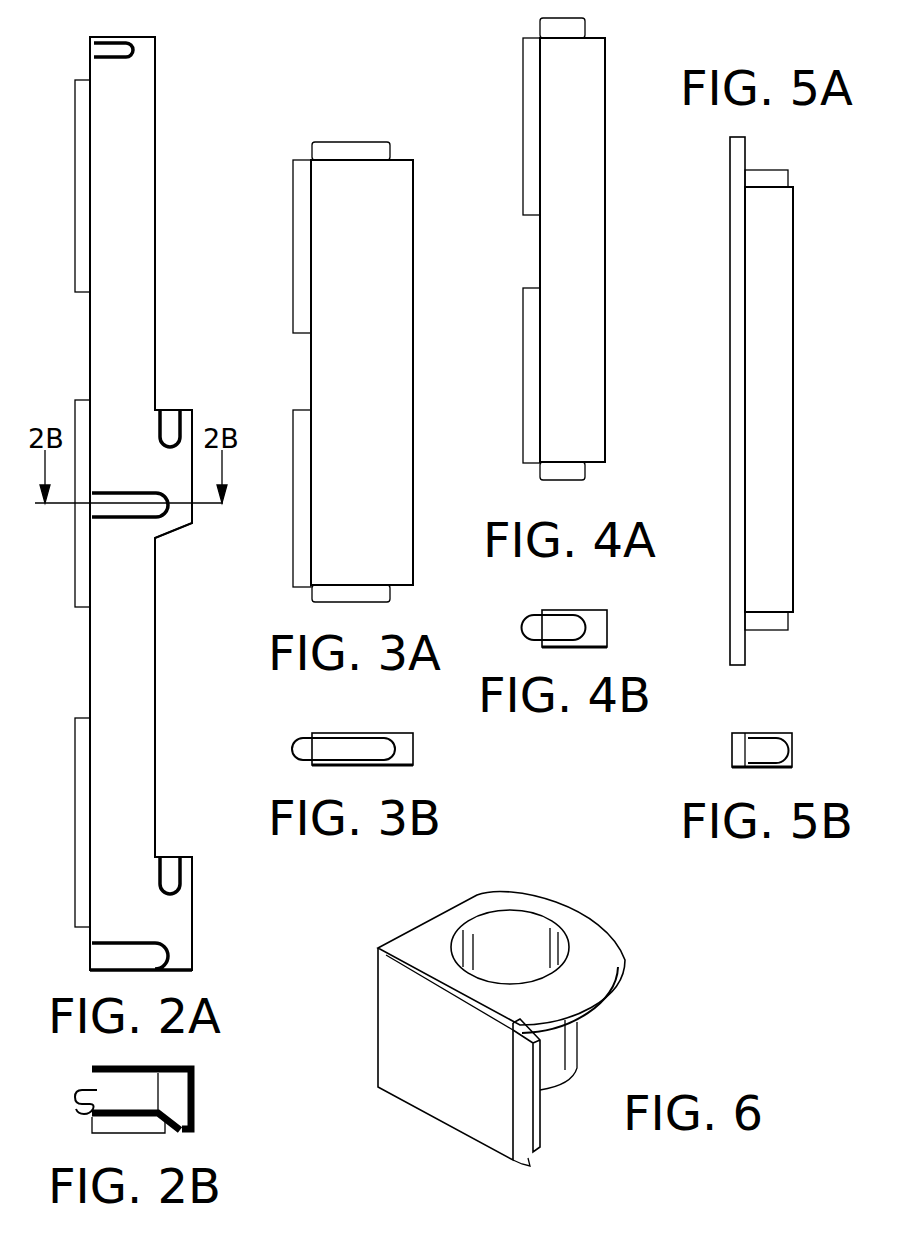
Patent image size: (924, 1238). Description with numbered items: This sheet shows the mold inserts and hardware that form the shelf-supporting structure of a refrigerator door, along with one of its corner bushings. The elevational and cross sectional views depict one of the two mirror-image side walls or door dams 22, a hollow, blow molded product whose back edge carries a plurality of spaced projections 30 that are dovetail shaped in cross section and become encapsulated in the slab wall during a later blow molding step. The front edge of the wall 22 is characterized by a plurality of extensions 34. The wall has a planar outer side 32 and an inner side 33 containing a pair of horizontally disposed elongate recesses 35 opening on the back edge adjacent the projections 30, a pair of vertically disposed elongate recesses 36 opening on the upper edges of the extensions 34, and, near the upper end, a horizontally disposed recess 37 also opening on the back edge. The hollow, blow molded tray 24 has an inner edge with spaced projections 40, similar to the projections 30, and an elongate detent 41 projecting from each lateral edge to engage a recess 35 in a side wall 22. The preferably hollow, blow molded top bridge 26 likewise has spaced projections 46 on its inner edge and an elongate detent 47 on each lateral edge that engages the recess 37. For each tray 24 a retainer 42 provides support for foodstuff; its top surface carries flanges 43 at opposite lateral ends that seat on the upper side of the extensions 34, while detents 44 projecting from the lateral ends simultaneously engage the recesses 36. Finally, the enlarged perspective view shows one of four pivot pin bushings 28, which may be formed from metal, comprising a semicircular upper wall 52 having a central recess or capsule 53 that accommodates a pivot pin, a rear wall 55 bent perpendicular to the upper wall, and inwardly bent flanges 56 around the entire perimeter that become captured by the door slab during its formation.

In FIG. 2A, the side wall 22 is at (164, 163).
In FIG. 3A, the tray 24 is at (365, 130).
In FIG. 3B, the tray 24 is at (430, 763).
In FIG. 4A, the top bridge 26 is at (620, 193).
In FIG. 4B, the top bridge 26 is at (620, 603).
In FIG. 6, the pivot pin bushing 28 is at (532, 1015).
In FIG. 2A, the projections 30 is at (75, 292).
In FIG. 2B, the projections 30 is at (75, 1102).
In FIG. 2B, the outer side 32 is at (185, 1067).
In FIG. 2A, the inner side 33 is at (157, 672).
In FIG. 2B, the inner side 33 is at (165, 1135).
In FIG. 2A, the extensions 34 is at (193, 430).
In FIG. 2A, the recesses 35 is at (170, 518).
In FIG. 2B, the recesses 35 is at (120, 1128).
In FIG. 2A, the recesses 36 is at (170, 417).
In FIG. 2A, the recess 37 is at (132, 53).
In FIG. 3A, the projections 40 is at (297, 335).
In FIG. 3B, the projections 40 is at (300, 749).
In FIG. 3A, the detent 41 is at (388, 147).
In FIG. 3B, the detent 41 is at (338, 743).
In FIG. 5A, the retainer 42 is at (742, 344).
In FIG. 5B, the retainer 42 is at (792, 738).
In FIG. 5A, the flanges 43 is at (745, 157).
In FIG. 5B, the flanges 43 is at (735, 746).
In FIG. 5A, the detents 44 is at (790, 178).
In FIG. 5B, the detents 44 is at (790, 765).
In FIG. 4A, the projections 46 is at (522, 205).
In FIG. 4B, the projections 46 is at (528, 622).
In FIG. 4A, the detent 47 is at (542, 31).
In FIG. 4B, the detent 47 is at (572, 625).
In FIG. 6, the upper wall 52 is at (430, 933).
In FIG. 6, the recess 53 is at (505, 942).
In FIG. 6, the rear wall 55 is at (410, 1035).
In FIG. 6, the flanges 56 is at (598, 997).